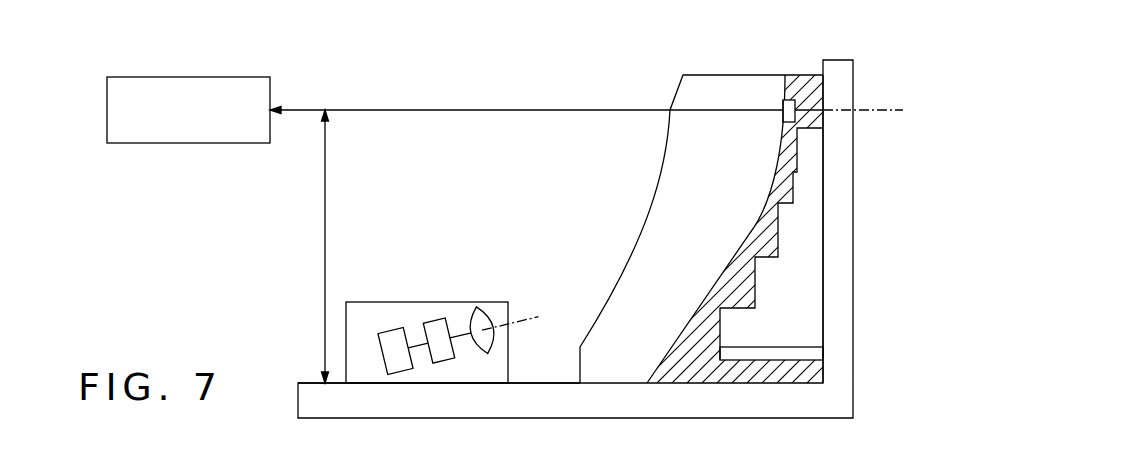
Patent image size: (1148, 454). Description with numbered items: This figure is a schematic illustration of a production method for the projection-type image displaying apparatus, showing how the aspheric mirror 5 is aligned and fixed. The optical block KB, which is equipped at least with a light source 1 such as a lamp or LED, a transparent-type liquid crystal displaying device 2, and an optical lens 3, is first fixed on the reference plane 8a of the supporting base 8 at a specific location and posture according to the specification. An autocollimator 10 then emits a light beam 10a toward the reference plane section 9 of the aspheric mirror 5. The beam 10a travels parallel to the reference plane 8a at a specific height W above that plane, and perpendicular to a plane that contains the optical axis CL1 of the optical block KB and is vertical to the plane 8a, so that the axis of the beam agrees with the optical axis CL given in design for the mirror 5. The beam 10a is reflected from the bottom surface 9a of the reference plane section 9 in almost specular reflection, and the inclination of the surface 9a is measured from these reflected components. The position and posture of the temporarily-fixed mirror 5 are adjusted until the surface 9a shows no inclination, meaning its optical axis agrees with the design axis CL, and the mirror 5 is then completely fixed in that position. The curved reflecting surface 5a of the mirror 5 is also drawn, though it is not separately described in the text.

The light source 1 is at (397, 373).
The transparent-type liquid crystal displaying device 2 is at (443, 358).
The optical lens 3 is at (490, 347).
The aspheric mirror 5 is at (803, 75).
The curved surface of lens 5a is at (747, 245).
The supporting base 8 is at (345, 403).
The reference plane 8a is at (543, 383).
The reference plane section 9 is at (779, 98).
The bottom surface 9a is at (781, 111).
The autocollimator 10 is at (184, 145).
The light beam 10a is at (487, 108).
The optical block KB is at (407, 302).
The optical axis CL is at (880, 110).
The optical axis CL1 is at (525, 318).
The specific height W is at (315, 246).